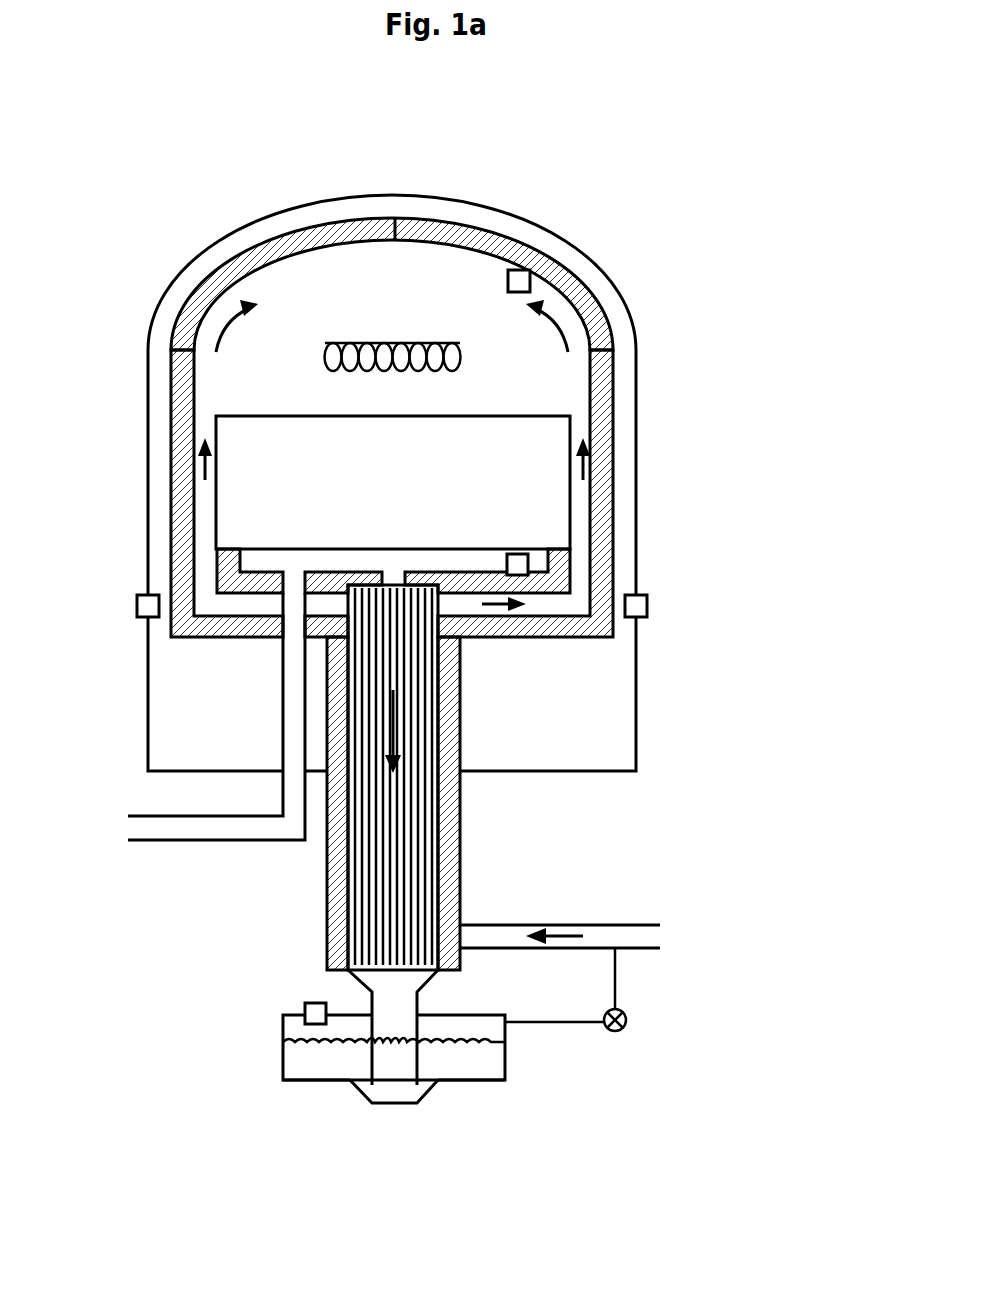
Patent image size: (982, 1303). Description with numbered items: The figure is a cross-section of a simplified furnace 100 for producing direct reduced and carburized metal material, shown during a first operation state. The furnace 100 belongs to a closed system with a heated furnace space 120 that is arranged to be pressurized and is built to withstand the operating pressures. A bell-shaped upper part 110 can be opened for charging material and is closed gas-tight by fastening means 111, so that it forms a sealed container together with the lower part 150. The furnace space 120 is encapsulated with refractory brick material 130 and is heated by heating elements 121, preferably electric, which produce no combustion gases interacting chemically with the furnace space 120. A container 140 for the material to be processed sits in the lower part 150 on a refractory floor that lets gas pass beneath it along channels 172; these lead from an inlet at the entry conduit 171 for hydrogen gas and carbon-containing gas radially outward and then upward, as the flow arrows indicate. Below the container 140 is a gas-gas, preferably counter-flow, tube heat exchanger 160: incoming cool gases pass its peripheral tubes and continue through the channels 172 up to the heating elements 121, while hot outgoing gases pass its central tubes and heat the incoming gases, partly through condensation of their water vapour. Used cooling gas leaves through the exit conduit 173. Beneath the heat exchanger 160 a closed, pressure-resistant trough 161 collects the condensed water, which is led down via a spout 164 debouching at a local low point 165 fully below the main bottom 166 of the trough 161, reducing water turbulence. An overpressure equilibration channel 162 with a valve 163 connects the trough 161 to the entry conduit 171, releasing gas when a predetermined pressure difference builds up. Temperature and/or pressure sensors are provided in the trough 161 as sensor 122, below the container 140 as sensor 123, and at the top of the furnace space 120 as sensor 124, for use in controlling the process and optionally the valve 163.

The furnace 100 is at (153, 225).
The upper part 110 is at (316, 200).
The fastening means 111 is at (648, 598).
The furnace space 120 is at (395, 283).
The heating elements 121 is at (447, 345).
The pressure sensor 122 is at (304, 1005).
The sensor 123 is at (530, 565).
The sensor 124 is at (532, 272).
The brick material 130 is at (255, 240).
The container 140 is at (613, 365).
The lower part 150 is at (147, 669).
The heat exchanger 160 is at (441, 860).
The trough 161 is at (282, 1068).
The overpressure equilibration channel 162 is at (615, 987).
The valve 163 is at (622, 1030).
The spout 164 is at (417, 1058).
The local low point 165 is at (385, 1103).
The main bottom 166 is at (292, 1082).
The entry conduit 171 is at (637, 925).
The channels 172 is at (200, 512).
The exit conduit 173 is at (157, 840).